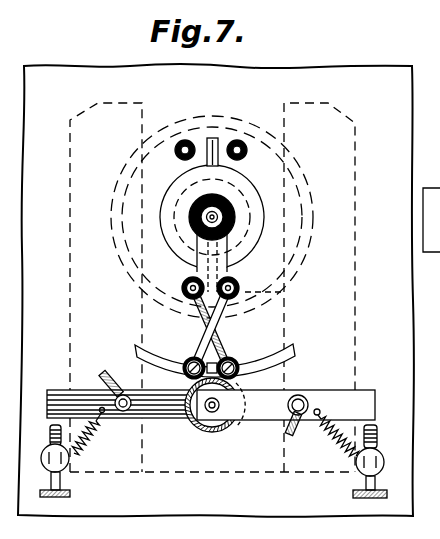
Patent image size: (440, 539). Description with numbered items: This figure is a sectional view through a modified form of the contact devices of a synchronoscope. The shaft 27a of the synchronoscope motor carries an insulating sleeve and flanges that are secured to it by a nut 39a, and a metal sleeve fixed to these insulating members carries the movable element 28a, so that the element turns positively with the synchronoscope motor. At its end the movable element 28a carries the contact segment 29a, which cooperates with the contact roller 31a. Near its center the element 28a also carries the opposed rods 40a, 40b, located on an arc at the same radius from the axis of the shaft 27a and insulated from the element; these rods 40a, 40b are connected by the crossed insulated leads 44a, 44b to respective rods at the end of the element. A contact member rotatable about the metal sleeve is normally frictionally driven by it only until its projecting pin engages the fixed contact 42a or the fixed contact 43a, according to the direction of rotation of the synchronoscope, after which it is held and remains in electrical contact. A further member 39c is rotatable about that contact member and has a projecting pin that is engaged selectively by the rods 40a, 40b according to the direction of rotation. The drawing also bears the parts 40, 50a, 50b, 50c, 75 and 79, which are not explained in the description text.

The fixed contact 42a is at (183, 141).
The rod 40 is at (211, 138).
The fixed contact 43a is at (239, 141).
The shaft 27a is at (203, 212).
The further member 39c is at (250, 236).
The nut 39a is at (212, 217).
The movable element 28a is at (224, 218).
The rod 40b is at (262, 293).
The rod 40a is at (188, 298).
The crossed insulated lead 44b is at (236, 297).
The crossed insulated lead 44a is at (210, 316).
The link 50c is at (233, 335).
The roller 50b is at (190, 358).
The roller 50a is at (237, 360).
The contact segment 29a is at (138, 352).
The pin 79 is at (104, 376).
The contact roller 31a is at (216, 424).
The pin 75 is at (288, 434).